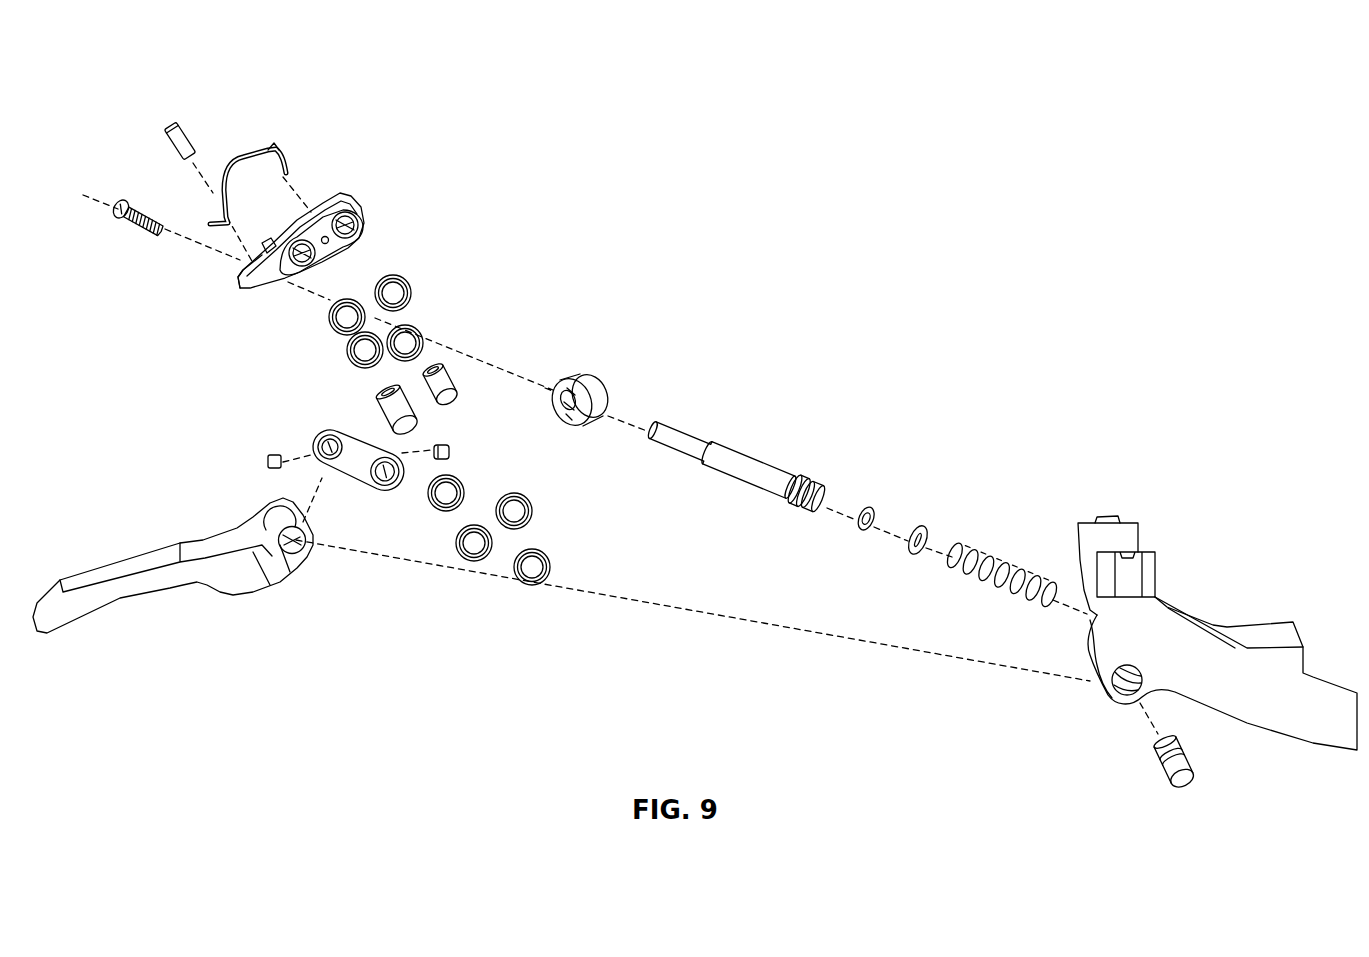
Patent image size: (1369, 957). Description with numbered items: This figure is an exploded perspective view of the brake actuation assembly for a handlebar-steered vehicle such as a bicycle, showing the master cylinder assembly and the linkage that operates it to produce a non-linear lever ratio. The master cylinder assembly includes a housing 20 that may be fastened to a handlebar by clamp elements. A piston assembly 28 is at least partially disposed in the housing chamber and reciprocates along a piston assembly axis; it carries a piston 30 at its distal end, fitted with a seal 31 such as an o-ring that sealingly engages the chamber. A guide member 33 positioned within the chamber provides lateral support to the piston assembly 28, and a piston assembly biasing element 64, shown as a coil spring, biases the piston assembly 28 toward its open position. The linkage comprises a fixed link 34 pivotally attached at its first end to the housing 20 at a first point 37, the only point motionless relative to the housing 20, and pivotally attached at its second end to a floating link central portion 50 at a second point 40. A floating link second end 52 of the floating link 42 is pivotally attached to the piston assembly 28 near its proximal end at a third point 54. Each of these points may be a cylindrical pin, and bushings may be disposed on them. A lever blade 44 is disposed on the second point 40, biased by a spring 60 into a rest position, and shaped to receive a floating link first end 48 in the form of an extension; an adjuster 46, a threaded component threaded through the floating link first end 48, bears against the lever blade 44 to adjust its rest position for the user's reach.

The housing 20 is at (1200, 617).
The piston assembly 28 is at (754, 468).
The piston 30 is at (824, 490).
The seal 31 is at (930, 527).
The guide member 33 is at (593, 377).
The fixed link 34 is at (350, 487).
The first point 37 is at (1181, 778).
The second point 40 is at (410, 420).
The floating link 42 is at (353, 243).
The lever blade 44 is at (123, 603).
The adjuster 46 is at (170, 147).
The floating link first end 48 is at (243, 290).
The floating link central portion 50 is at (333, 258).
The floating link second end 52 is at (322, 258).
The third point 54 is at (457, 390).
The spring 60 is at (245, 152).
The piston assembly biasing element 64 is at (997, 560).